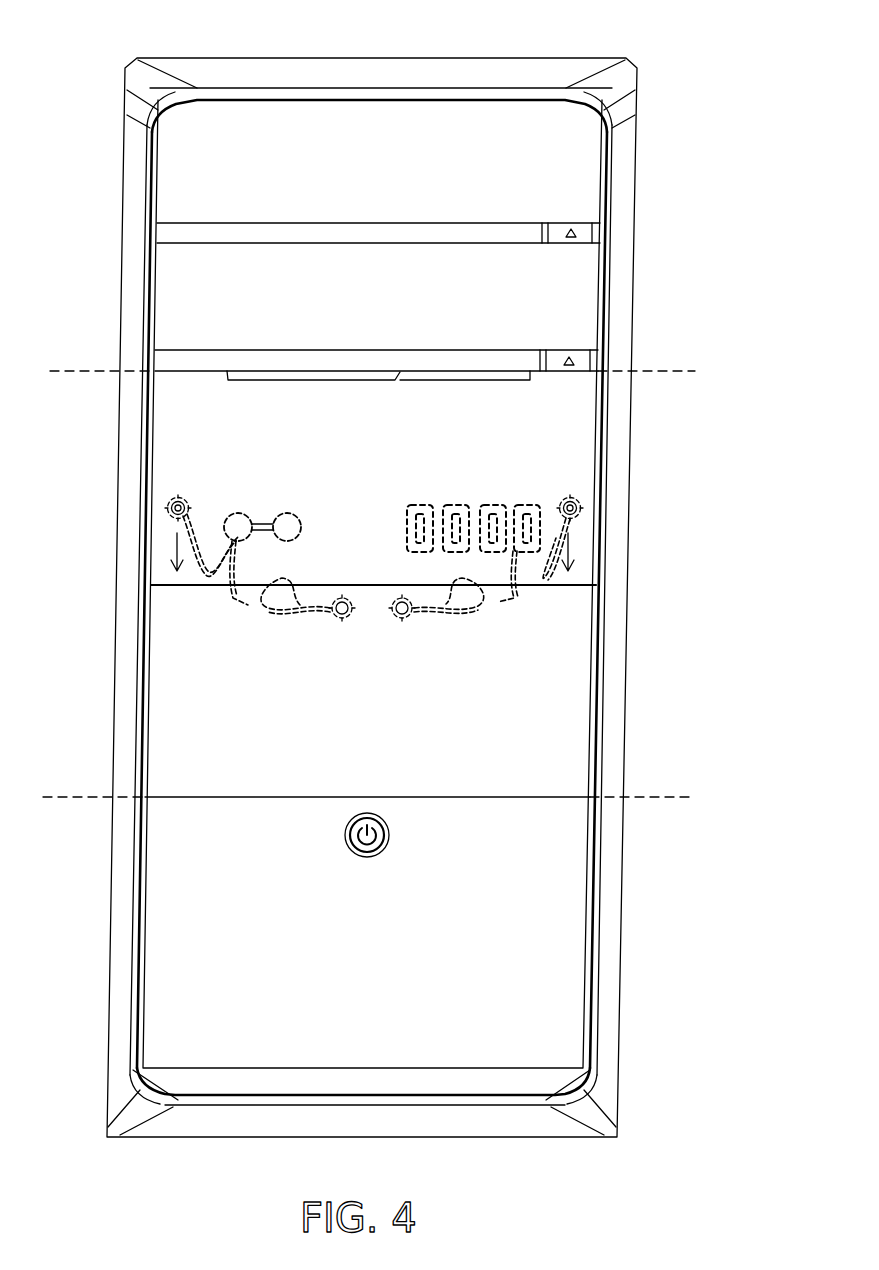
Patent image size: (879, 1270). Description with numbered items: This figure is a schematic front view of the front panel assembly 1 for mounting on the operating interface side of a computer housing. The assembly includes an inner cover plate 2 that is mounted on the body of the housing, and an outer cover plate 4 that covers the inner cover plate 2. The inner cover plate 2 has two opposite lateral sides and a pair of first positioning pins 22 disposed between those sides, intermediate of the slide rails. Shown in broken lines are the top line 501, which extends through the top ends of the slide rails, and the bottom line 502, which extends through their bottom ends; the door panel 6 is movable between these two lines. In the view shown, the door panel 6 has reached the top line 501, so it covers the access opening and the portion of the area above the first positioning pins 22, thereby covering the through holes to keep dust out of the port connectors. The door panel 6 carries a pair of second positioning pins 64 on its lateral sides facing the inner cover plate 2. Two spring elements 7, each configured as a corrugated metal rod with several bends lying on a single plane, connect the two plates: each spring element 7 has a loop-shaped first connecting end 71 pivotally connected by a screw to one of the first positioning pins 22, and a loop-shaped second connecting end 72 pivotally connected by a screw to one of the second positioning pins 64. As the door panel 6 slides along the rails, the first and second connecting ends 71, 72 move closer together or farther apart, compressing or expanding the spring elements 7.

The front panel assembly 1 is at (662, 60).
The inner cover plate 2 is at (610, 738).
The outer cover plate 4 is at (205, 990).
The door panel 6 is at (553, 438).
The spring elements 7 is at (233, 598).
The first positioning pins 22 is at (330, 619).
The second positioning pins 64 is at (168, 520).
The first connecting end 71 is at (397, 619).
The second connecting end 72 is at (168, 502).
The top line 501 is at (671, 368).
The bottom line 502 is at (660, 800).